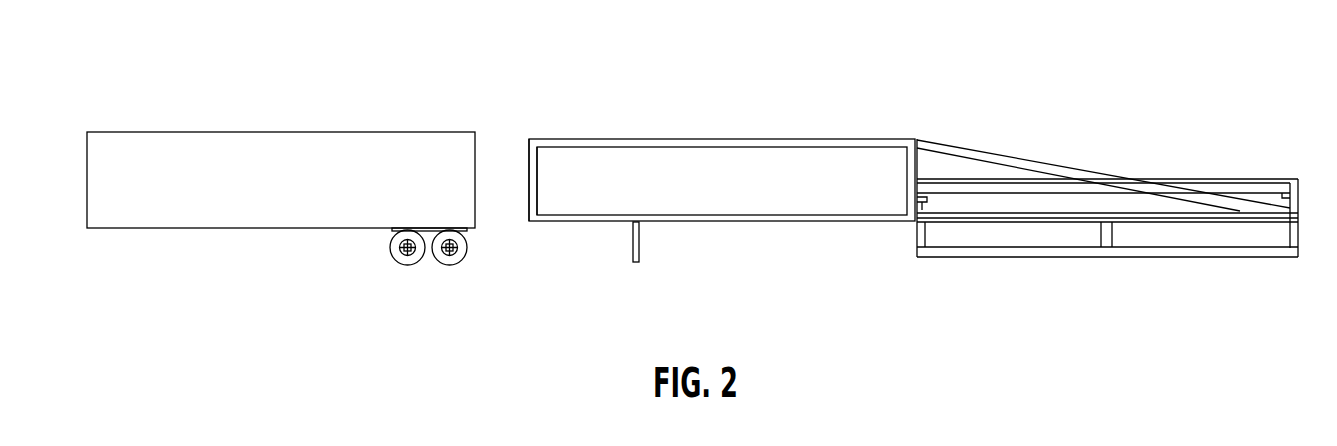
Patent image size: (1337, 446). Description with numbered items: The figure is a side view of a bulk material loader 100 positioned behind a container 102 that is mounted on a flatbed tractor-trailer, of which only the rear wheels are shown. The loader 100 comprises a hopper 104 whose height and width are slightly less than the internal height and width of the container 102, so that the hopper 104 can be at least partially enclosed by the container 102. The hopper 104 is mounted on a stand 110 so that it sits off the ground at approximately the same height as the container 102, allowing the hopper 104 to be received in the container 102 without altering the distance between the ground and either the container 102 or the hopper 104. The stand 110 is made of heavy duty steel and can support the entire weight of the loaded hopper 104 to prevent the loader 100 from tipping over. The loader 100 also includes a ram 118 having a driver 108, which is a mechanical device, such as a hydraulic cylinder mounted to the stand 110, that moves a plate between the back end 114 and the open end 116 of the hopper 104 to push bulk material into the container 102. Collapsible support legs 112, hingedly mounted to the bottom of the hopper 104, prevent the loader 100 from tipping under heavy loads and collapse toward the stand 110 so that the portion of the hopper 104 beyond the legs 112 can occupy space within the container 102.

The bulk material loader 100 is at (450, 58).
The container 102 is at (207, 127).
The hopper 104 is at (752, 136).
The driver 108 is at (1202, 175).
The stand 110 is at (1180, 262).
The support legs 112 is at (635, 270).
The back end 114 is at (920, 148).
The open end 116 is at (528, 161).
The ram 118 is at (983, 200).